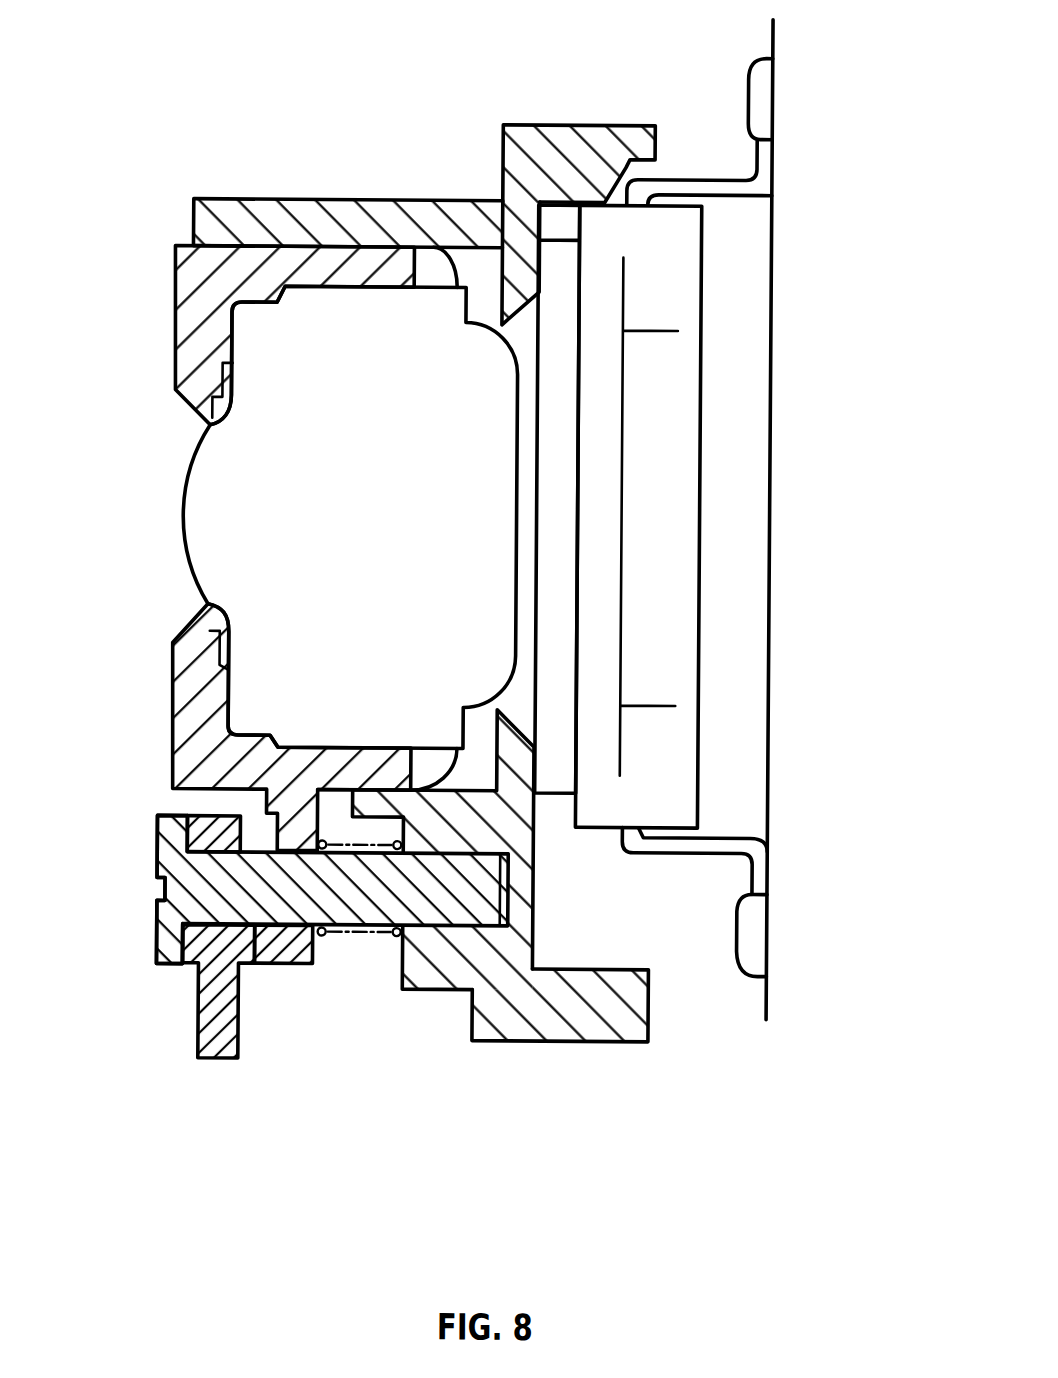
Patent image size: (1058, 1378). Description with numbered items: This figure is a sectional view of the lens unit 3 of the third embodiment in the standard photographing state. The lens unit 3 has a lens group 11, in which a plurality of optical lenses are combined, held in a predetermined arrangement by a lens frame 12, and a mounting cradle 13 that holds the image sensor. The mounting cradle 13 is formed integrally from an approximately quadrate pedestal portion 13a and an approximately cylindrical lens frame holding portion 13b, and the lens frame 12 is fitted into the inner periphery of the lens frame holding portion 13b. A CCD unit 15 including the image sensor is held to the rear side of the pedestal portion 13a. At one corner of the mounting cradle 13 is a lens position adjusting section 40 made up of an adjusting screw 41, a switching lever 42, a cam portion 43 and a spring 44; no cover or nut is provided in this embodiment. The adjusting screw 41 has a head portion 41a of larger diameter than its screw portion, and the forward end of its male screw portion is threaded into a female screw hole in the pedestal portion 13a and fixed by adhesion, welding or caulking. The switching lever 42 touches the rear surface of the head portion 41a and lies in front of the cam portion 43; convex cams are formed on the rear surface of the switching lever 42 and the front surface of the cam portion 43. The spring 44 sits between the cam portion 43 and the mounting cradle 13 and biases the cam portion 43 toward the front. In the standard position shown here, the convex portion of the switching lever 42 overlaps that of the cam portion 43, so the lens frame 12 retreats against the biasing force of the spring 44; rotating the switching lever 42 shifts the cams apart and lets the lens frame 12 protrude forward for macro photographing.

The lens unit 3 is at (465, 600).
The lens group 11 is at (360, 566).
The lens frame 12 is at (197, 321).
The mounting cradle 13 is at (573, 102).
The pedestal portion 13a is at (521, 126).
The lens frame holding portion 13b is at (319, 213).
The CCD unit 15 is at (673, 528).
The lens position adjusting section 40 is at (297, 1006).
The adjusting screw 41 is at (305, 897).
The head portion 41a is at (172, 924).
The switching lever 42 is at (203, 1010).
The cam portion 43 is at (273, 942).
The spring 44 is at (379, 938).